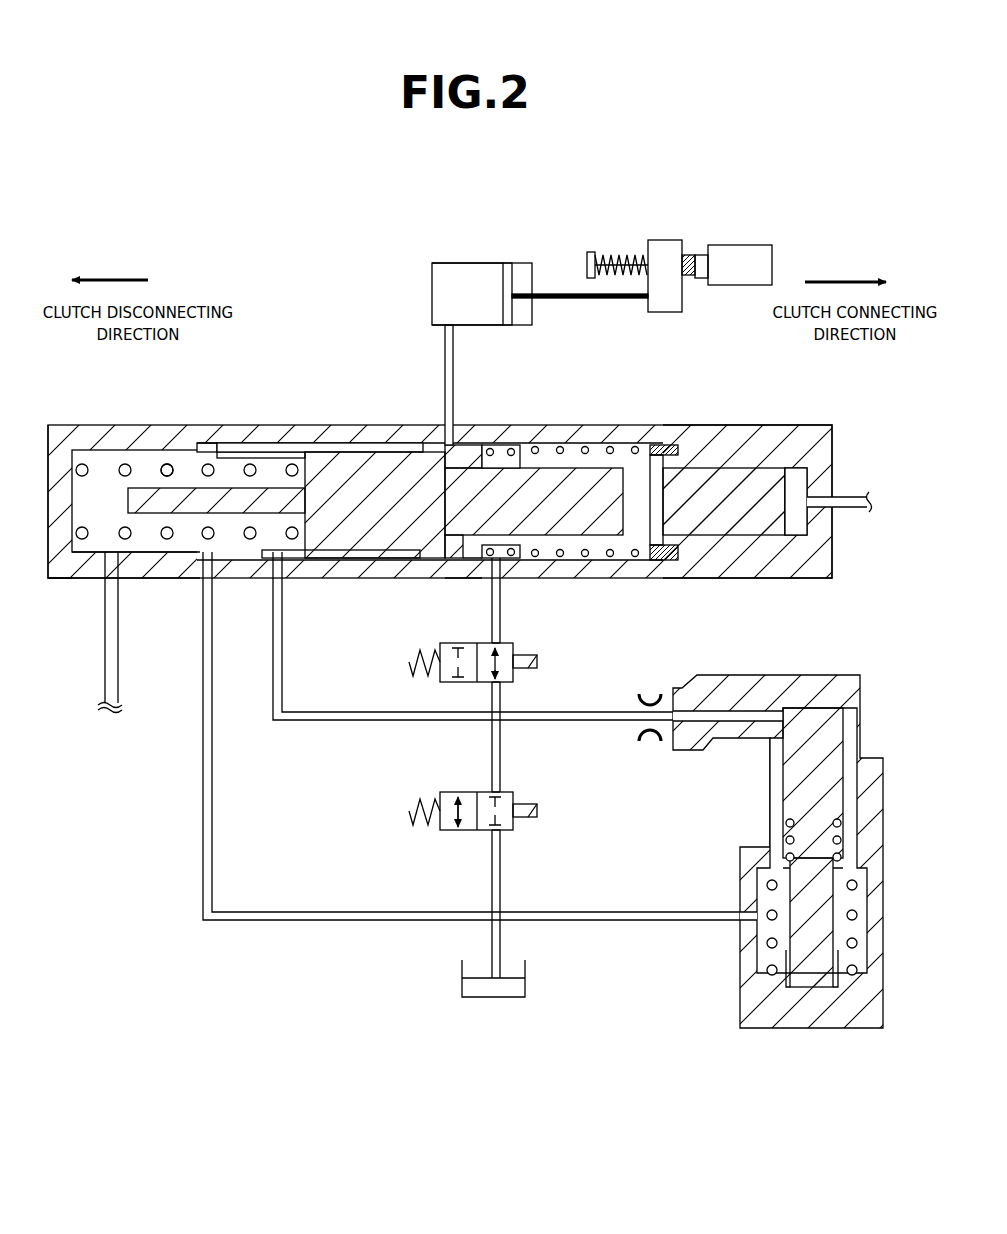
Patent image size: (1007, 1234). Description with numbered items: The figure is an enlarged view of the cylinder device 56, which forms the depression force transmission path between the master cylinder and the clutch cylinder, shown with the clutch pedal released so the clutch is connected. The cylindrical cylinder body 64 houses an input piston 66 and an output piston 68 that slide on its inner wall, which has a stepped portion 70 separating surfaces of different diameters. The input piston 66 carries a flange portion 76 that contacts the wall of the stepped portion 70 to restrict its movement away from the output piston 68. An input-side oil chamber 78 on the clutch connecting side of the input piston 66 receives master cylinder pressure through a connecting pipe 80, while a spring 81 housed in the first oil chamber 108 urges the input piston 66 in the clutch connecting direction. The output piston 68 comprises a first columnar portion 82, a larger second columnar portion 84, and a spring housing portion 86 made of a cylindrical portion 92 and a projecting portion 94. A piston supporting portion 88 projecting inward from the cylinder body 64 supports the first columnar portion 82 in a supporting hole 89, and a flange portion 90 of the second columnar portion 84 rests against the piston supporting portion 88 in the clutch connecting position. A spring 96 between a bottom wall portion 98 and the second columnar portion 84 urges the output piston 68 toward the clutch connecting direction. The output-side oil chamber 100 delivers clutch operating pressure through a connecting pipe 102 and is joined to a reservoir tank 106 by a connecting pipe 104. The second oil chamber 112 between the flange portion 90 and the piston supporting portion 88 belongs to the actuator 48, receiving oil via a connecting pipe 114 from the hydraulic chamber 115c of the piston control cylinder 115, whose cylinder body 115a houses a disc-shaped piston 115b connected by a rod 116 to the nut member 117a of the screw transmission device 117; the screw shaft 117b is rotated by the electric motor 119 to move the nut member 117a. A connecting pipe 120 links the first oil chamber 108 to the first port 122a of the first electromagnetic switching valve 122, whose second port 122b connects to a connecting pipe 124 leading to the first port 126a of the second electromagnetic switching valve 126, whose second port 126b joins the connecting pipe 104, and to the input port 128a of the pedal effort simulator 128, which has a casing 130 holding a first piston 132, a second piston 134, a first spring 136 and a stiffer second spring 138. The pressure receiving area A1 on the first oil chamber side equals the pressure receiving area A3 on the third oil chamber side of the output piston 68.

The actuator 48 is at (528, 212).
The cylinder device 56 is at (658, 343).
The cylinder body 64 is at (142, 418).
The input piston 66 is at (736, 540).
The output piston 68 is at (354, 470).
The stepped portion 70 is at (700, 465).
The flange portion 76 is at (677, 446).
The input-side oil chamber 78 is at (798, 480).
The connecting pipe 80 is at (843, 510).
The spring 81 is at (575, 446).
The first columnar portion 82 is at (586, 488).
The second columnar portion 84 is at (340, 548).
The spring housing portion 86 is at (244, 478).
The piston supporting portion 88 is at (500, 450).
The supporting hole 89 is at (482, 448).
The flange portion 90 is at (440, 452).
The cylindrical portion 92 is at (270, 450).
The projecting portion 94 is at (214, 497).
The spring 96 is at (178, 464).
The bottom wall portion 98 is at (56, 500).
The output-side oil chamber 100 is at (105, 530).
The connecting pipe 102 is at (118, 625).
The connecting pipe 104 is at (300, 920).
The reservoir tank 106 is at (495, 999).
The first oil chamber 108 is at (645, 470).
The second oil chamber 112 is at (450, 578).
The connecting pipe 114 is at (445, 378).
The piston control cylinder 115 is at (465, 252).
The cylinder body 115a is at (440, 263).
The piston 115b is at (508, 325).
The hydraulic chamber 115c is at (455, 300).
The rod 116 is at (560, 300).
The screw transmission device 117 is at (640, 232).
The nut member 117a is at (678, 243).
The screw shaft 117b is at (612, 254).
The electric motor 119 is at (768, 262).
The connecting pipe 120 is at (502, 608).
The first electromagnetic switching valve 122 is at (458, 681).
The first port 122a is at (492, 645).
The second port 122b is at (500, 683).
The connecting pipe 124 is at (350, 721).
The second electromagnetic switching valve 126 is at (458, 832).
The first port 126a is at (500, 794).
The second port 126b is at (500, 832).
The pedal effort simulator 128 is at (772, 853).
The input port 128a is at (662, 700).
The casing 130 is at (866, 766).
The first piston 132 is at (810, 708).
The second piston 134 is at (845, 930).
The first spring 136 is at (786, 830).
The second spring 138 is at (768, 940).
The pressure receiving area A1 is at (625, 562).
The pressure receiving area A3 is at (385, 440).